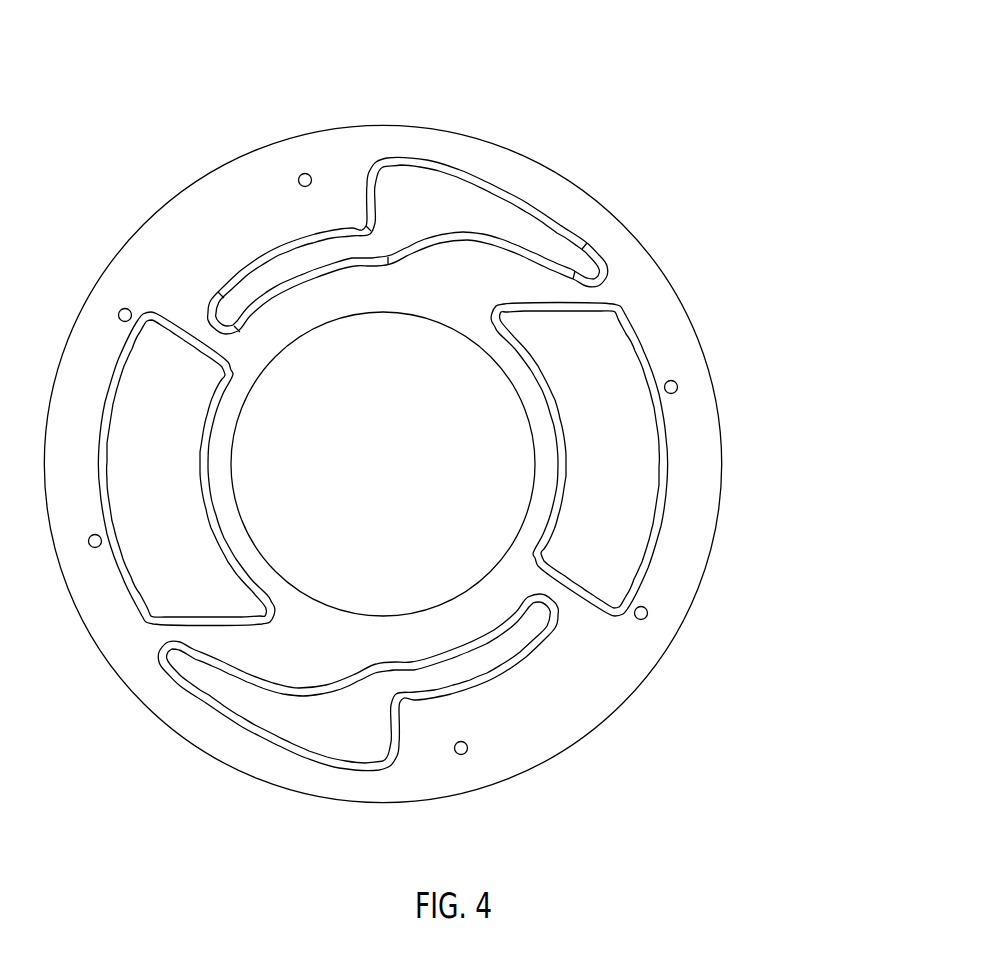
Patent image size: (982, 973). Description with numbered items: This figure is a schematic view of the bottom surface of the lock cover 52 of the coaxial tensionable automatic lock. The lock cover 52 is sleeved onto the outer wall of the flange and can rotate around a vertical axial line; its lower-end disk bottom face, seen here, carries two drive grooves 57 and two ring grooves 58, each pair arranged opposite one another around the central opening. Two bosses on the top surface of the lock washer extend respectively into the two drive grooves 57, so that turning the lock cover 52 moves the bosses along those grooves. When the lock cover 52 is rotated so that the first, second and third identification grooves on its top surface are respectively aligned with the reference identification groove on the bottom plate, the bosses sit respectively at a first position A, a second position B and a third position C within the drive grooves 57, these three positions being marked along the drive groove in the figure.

The lock cover 52 is at (722, 471).
The drive groove 57 is at (468, 211).
The ring groove 58 is at (605, 403).
The first position A is at (240, 321).
The second position B is at (388, 264).
The third position C is at (573, 273).